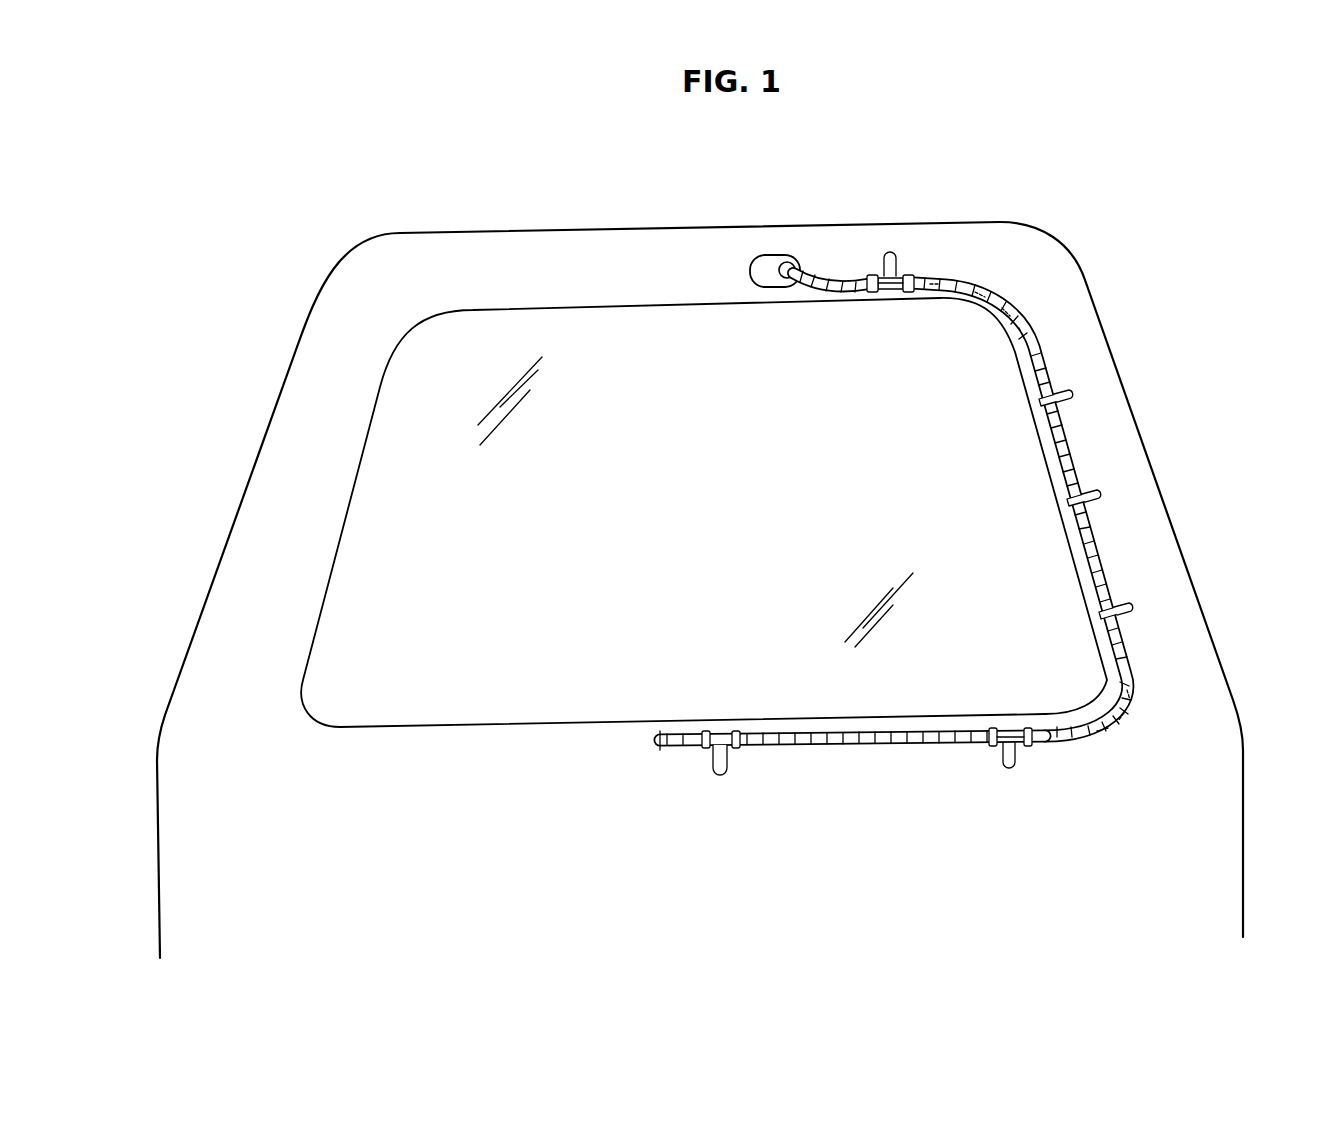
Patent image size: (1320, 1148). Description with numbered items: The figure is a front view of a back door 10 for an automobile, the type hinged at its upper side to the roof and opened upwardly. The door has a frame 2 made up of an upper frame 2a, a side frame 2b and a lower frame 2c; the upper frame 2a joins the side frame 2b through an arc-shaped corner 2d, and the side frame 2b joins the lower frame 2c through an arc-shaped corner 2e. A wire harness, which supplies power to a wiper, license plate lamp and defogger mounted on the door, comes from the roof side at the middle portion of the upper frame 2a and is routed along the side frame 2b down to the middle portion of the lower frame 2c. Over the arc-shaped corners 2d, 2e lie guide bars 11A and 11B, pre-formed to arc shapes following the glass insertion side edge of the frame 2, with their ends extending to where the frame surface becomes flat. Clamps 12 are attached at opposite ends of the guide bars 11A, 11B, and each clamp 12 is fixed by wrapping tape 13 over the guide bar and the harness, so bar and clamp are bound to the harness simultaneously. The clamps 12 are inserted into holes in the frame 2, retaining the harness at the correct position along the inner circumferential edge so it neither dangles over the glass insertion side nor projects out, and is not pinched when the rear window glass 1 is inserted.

The window glass 1 is at (517, 382).
The frame 2 is at (290, 363).
The upper frame 2a is at (583, 250).
The side frame 2b is at (1135, 463).
The lower frame 2c is at (518, 742).
The arc-shaped corner 2d is at (1017, 257).
The arc-shaped corner 2e is at (1140, 748).
The back door 10 is at (1103, 307).
The guide bar 11A is at (970, 300).
The guide bar 11B is at (1083, 725).
The clamp 12 is at (897, 257).
The tape 13 is at (873, 293).